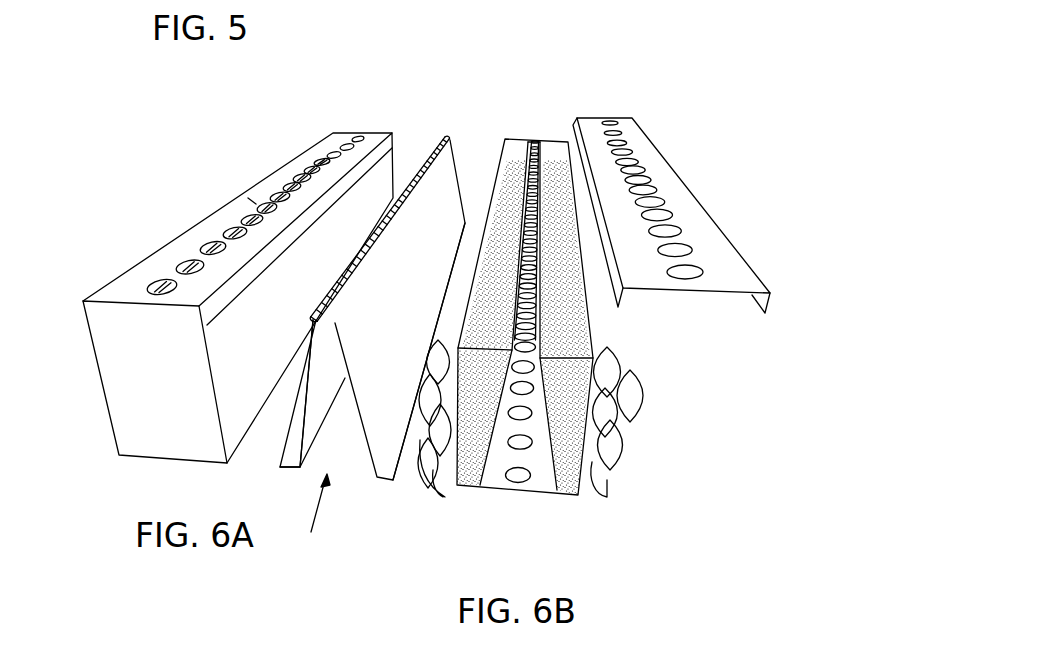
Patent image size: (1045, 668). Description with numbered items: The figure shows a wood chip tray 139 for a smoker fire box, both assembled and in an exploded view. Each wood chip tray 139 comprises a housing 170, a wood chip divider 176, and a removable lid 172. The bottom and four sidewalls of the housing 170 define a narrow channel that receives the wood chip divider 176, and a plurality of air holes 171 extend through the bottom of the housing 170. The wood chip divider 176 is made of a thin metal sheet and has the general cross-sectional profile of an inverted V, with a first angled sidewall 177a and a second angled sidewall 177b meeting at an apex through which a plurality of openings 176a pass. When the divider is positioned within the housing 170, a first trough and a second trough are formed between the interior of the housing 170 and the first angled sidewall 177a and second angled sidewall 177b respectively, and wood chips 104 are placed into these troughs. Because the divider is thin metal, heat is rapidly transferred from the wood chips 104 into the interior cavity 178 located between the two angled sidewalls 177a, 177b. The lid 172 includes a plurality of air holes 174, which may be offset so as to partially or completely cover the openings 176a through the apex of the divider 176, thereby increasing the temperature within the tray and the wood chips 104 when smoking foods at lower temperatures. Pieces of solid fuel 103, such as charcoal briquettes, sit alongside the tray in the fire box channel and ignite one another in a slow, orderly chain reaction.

In FIG. 6B, the solid fuel 103 is at (432, 488).
In FIG. 6B, the wood chips 104 is at (593, 337).
In FIG. 6A, the wood chip tray 139 is at (250, 202).
In FIG. 6A, the housing 170 is at (118, 408).
In FIG. 6B, the housing 170 is at (550, 155).
In FIG. 6B, the holes 171 is at (512, 478).
In FIG. 6A, the removable lid 172 is at (132, 287).
In FIG. 6B, the removable lid 172 is at (632, 118).
In FIG. 6A, the air holes 174 is at (300, 172).
In FIG. 6B, the air holes 174 is at (693, 272).
In FIG. 6A, the wood chip divider 176 is at (372, 413).
In FIG. 6A, the openings 176a is at (418, 204).
In FIG. 6A, the first angled sidewall 177a is at (302, 437).
In FIG. 6A, the second angled sidewall 177b is at (375, 447).
In FIG. 6A, the interior cavity 178 is at (316, 520).